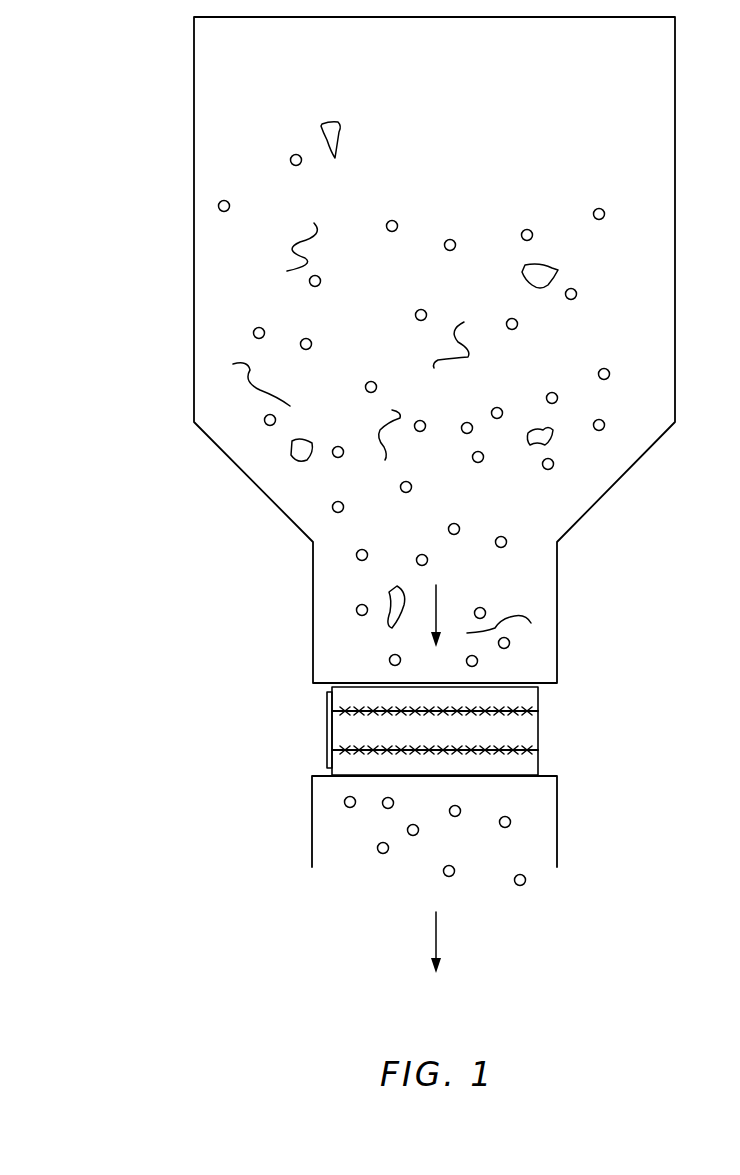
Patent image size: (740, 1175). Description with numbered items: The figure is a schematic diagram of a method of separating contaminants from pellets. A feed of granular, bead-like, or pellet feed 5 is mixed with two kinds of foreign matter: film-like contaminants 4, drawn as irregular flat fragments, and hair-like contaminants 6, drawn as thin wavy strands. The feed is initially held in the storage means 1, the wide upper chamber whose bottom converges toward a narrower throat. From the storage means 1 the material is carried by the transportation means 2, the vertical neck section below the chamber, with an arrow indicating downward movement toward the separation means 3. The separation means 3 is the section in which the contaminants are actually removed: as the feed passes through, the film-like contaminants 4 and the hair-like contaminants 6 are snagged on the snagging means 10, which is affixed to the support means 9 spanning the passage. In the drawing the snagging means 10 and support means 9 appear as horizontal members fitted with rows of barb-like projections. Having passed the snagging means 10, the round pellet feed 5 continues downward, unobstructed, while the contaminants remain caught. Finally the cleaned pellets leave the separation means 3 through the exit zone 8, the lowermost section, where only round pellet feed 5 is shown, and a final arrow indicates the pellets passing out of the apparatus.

The storage means 1 is at (166, 238).
The transportation means 2 is at (231, 600).
The separation means 3 is at (365, 731).
The film-like contaminants 4 is at (341, 128).
The pellet feed 5 is at (397, 222).
The hair-like contaminants 6 is at (462, 367).
The exit zone 8 is at (231, 817).
The support means 9 is at (528, 750).
The snagging means 10 is at (533, 711).